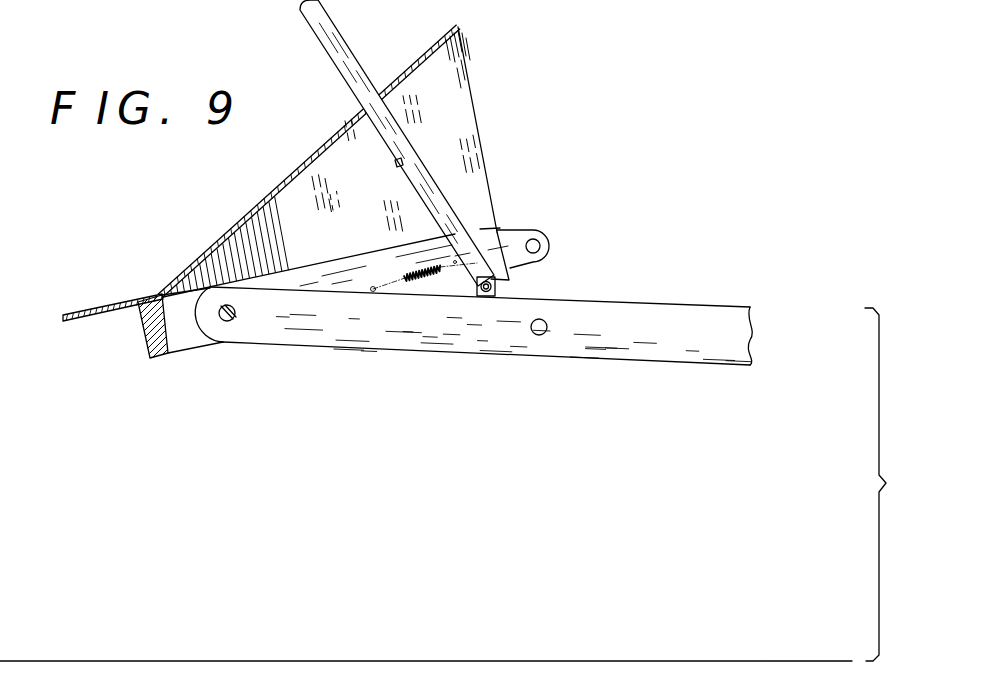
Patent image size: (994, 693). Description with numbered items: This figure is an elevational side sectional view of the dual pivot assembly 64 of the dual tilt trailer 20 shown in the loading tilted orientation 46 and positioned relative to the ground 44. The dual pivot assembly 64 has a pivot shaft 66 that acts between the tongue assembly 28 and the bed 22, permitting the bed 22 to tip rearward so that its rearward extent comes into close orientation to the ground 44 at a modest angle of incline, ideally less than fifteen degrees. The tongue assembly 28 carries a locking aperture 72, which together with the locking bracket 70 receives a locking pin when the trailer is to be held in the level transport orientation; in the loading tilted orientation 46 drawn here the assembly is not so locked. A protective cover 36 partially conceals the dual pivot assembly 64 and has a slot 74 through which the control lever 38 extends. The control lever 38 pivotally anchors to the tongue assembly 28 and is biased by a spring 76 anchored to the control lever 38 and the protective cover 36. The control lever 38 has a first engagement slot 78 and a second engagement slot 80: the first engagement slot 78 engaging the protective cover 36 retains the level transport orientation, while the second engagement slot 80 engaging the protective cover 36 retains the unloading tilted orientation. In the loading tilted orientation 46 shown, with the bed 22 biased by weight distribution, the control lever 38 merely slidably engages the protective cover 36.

The dual tilt trailer 20 is at (665, 92).
The bed 22 is at (122, 300).
The tongue assembly 28 is at (475, 335).
The protective cover 36 is at (337, 137).
The control lever 38 is at (367, 143).
The ground 44 is at (561, 661).
The loading tilted orientation 46 is at (636, 47).
The dual pivot assembly 64 is at (473, 348).
The pivot shaft 66 is at (230, 320).
The locking bracket 70 is at (548, 252).
The locking aperture 72 is at (543, 336).
The slot 74 is at (380, 97).
The spring 76 is at (415, 268).
The first engagement slot 78 is at (396, 163).
The second engagement slot 80 is at (455, 240).